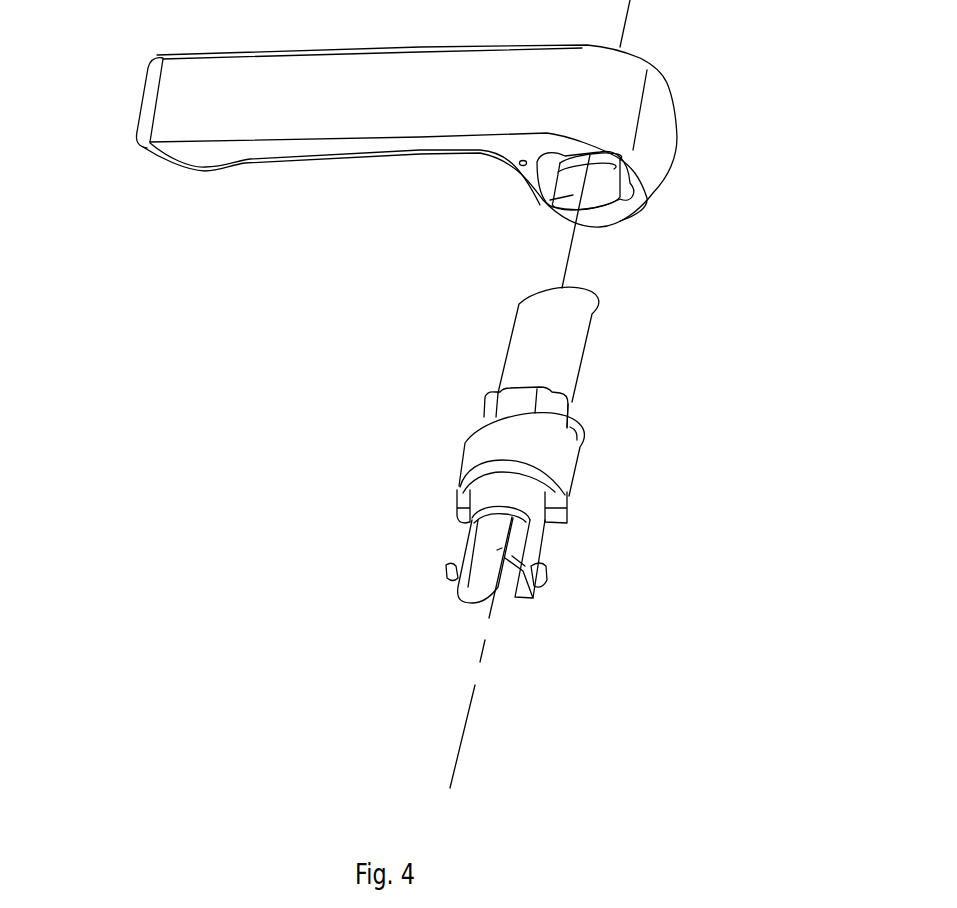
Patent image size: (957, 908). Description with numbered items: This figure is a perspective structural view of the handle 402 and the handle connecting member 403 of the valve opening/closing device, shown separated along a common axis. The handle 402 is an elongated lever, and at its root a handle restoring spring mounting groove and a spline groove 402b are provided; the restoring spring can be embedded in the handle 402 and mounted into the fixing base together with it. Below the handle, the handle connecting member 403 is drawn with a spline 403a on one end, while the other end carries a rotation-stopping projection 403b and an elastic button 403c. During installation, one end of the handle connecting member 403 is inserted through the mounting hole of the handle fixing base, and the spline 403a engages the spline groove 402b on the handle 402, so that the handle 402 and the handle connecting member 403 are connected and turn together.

The handle 402 is at (359, 202).
The spline groove 402b is at (540, 205).
The handle connecting member 403 is at (505, 445).
The spline 403a is at (545, 412).
The rotation-stopping projection 403b is at (567, 503).
The elastic button 403c is at (535, 568).